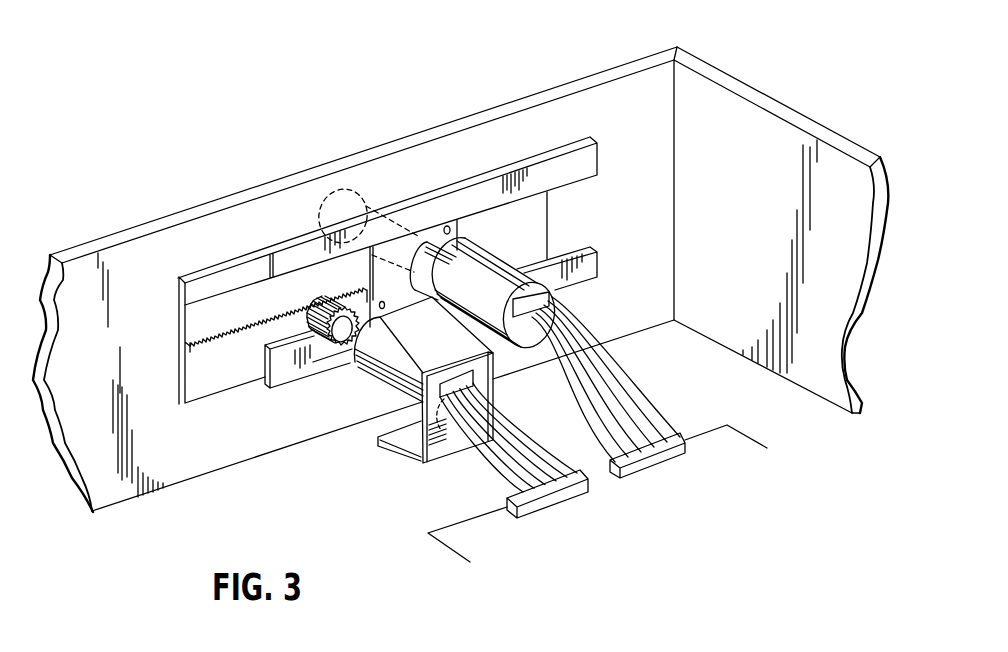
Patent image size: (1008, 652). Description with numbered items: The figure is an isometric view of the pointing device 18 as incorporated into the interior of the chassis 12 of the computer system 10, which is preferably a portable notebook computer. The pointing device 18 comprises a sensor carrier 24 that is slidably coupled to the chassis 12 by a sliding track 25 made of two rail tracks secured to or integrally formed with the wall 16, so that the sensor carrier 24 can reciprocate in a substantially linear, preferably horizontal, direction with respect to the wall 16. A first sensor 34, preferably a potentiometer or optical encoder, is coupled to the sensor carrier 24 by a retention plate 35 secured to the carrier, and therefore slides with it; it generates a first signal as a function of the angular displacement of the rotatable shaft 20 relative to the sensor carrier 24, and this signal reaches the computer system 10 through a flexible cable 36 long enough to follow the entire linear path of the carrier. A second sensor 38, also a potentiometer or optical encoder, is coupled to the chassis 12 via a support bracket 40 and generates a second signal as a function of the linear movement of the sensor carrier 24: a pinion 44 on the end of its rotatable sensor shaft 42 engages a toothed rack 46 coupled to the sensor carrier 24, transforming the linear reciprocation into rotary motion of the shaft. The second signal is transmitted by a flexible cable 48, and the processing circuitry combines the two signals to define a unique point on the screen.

The computer system 10 is at (280, 53).
The chassis 12 is at (797, 105).
The wall 16 is at (180, 210).
The pointing device 18 is at (433, 166).
The rotatable shaft 20 is at (353, 195).
The sensor carrier 24 is at (522, 217).
The sliding track 25 is at (590, 166).
The first sensor 34 is at (505, 272).
The retention plate 35 is at (448, 226).
The flexible cable 36 is at (604, 365).
The second sensor 38 is at (372, 386).
The support bracket 40 is at (386, 453).
The rotatable sensor shaft 42 is at (338, 340).
The pinion 44 is at (303, 325).
The rack 46 is at (203, 348).
The flexible cable 48 is at (500, 472).